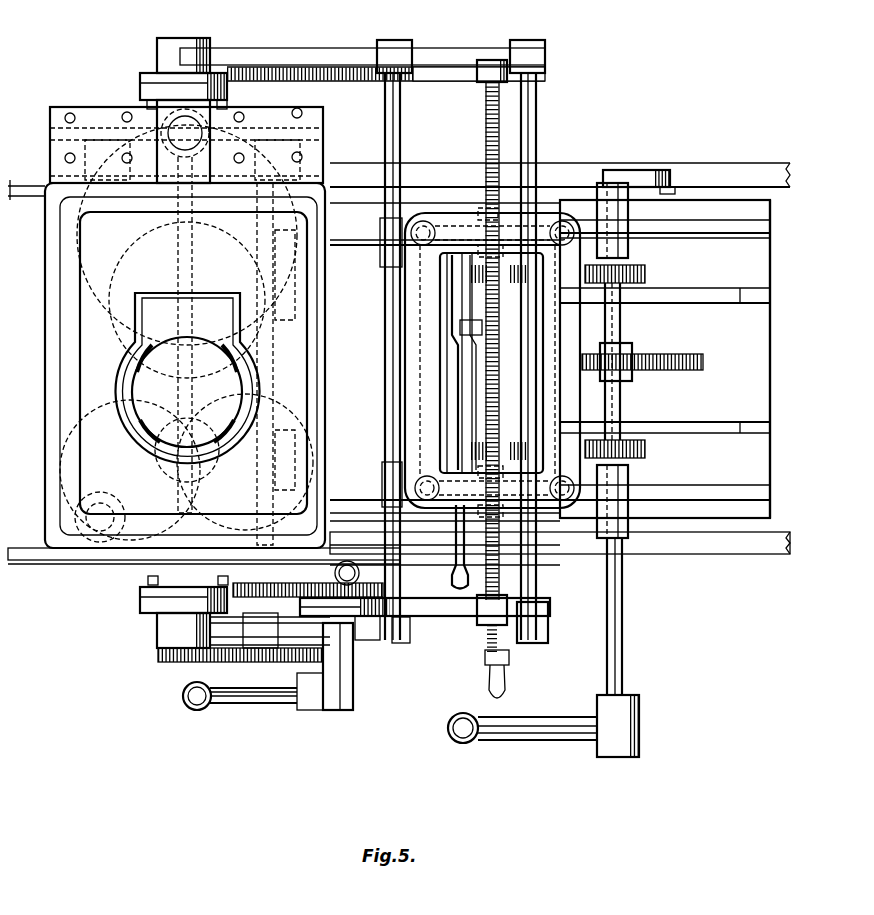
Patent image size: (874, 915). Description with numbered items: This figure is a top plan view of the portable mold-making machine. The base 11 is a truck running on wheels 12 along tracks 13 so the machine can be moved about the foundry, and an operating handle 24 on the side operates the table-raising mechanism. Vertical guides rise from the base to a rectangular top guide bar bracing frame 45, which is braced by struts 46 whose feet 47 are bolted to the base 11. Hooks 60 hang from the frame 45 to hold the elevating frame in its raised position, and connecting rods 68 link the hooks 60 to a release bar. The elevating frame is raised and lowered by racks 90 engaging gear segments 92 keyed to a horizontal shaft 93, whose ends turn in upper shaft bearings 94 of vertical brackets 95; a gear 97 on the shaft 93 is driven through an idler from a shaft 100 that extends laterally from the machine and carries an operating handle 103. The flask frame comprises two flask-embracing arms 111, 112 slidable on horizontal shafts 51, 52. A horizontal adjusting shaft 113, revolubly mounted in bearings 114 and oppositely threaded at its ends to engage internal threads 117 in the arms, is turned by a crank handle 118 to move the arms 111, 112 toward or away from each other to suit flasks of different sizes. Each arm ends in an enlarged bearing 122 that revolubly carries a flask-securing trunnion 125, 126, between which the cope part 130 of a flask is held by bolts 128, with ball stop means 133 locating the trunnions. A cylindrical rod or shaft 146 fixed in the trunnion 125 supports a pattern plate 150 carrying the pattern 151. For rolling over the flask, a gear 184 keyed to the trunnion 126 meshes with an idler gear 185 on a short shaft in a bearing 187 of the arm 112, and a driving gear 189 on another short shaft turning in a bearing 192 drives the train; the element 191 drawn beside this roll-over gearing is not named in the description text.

The base 11 is at (726, 468).
The wheels 12 is at (642, 177).
The tracks 13 is at (706, 174).
The operating handle 24 is at (347, 566).
The rectangular top guide bar bracing frame 45 is at (416, 292).
The bracing struts 46 is at (708, 298).
The feet 47 is at (751, 430).
The horizontal shaft 51 is at (386, 126).
The horizontal shaft 52 is at (530, 128).
The hooks 60 is at (470, 505).
The connecting rods 68 is at (470, 312).
The racks 90 is at (460, 276).
The gear segments 92 is at (612, 277).
The horizontal shaft 93 is at (618, 328).
The upper shaft bearings 94 is at (595, 192).
The brackets 95 is at (737, 226).
The gear 97 is at (676, 365).
The shaft 100 is at (602, 658).
The operating handle 103 is at (536, 722).
The flask-embracing arm 111 is at (292, 58).
The flask-embracing arm 112 is at (375, 630).
The horizontal adjusting shaft 113 is at (487, 115).
The bearings 114 is at (484, 208).
The internal threads 117 is at (486, 62).
The crank handle 118 is at (493, 688).
The enlarged bearing 122 is at (176, 46).
The flask-securing trunnion 125 is at (142, 90).
The flask-securing trunnion 126 is at (145, 596).
The bolts 128 is at (243, 598).
The cope part 130 is at (65, 540).
The ball stop means 133 is at (147, 580).
The cylindrical rod or shaft 146 is at (190, 140).
The pattern plate 150 is at (280, 117).
The pattern 151 is at (136, 338).
The gear 184 is at (163, 664).
The idler gear 185 is at (255, 652).
The bearing 187 is at (253, 642).
The driving gear 189 is at (365, 640).
The handle rod 191 is at (222, 697).
The bearing 192 is at (345, 690).